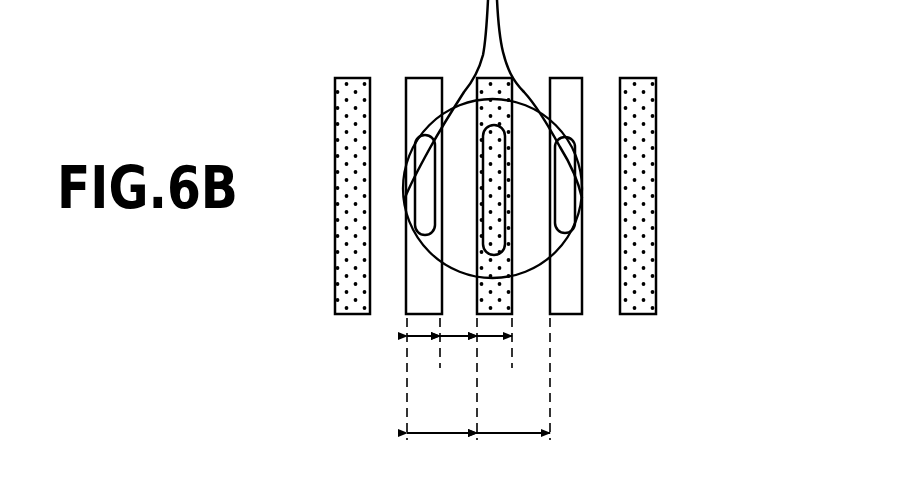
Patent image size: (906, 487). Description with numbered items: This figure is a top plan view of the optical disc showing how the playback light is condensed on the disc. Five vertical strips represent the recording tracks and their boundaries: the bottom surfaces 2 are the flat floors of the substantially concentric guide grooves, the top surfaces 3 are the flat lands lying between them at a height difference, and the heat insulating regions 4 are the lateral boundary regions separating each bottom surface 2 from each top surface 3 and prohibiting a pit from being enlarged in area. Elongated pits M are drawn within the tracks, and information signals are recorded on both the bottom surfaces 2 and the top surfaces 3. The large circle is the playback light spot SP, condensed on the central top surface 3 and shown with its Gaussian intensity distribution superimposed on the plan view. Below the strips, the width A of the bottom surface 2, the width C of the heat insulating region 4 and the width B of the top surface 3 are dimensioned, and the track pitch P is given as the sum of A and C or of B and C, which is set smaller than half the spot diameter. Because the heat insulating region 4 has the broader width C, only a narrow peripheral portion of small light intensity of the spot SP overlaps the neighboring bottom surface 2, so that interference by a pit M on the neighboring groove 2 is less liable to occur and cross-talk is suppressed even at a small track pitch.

The playback light spot SP is at (550, 130).
The pit M is at (413, 185).
The bottom surface 2 is at (418, 283).
The top surface 3 is at (512, 303).
The heat insulating region 4 is at (387, 245).
The width of the bottom surface A is at (423, 354).
The width of the top surface B is at (494, 354).
The width of the heat insulating region C is at (458, 354).
The track pitch P is at (478, 419).